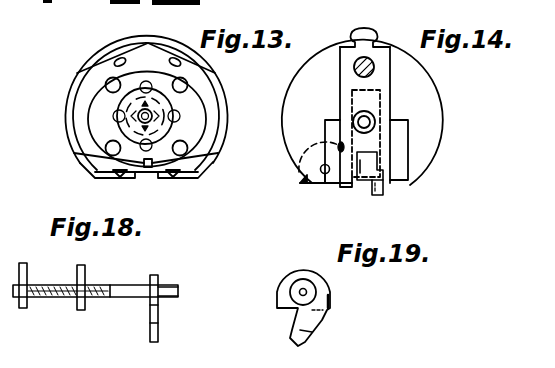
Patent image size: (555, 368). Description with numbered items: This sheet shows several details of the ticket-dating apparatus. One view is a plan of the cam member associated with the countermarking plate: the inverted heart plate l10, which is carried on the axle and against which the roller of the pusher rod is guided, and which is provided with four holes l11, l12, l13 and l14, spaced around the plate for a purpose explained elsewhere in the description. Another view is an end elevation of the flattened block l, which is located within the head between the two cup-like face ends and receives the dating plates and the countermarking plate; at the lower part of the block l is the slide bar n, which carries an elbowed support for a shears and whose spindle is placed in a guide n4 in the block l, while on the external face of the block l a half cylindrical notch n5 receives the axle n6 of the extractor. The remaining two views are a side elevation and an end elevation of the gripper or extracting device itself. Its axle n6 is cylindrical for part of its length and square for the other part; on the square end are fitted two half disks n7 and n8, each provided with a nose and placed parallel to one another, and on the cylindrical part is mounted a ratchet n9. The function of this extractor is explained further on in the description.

In FIG. 14, the flattened block l is at (377, 77).
In FIG. 13, the inverted heart plate l10 is at (197, 118).
In FIG. 13, the hole l11 is at (190, 83).
In FIG. 13, the hole l12 is at (110, 82).
In FIG. 13, the hole l13 is at (108, 149).
In FIG. 13, the hole l14 is at (177, 153).
In FIG. 14, the slide bar n is at (363, 155).
In FIG. 14, the guide n4 is at (376, 194).
In FIG. 14, the half cylindrical notch n5 is at (327, 178).
In FIG. 14, the axle n6 is at (307, 180).
In FIG. 18, the axle n6 is at (127, 290).
In FIG. 19, the axle n6 is at (310, 295).
In FIG. 18, the half disk n7 is at (23, 305).
In FIG. 18, the half disk n8 is at (82, 310).
In FIG. 19, the half disk n8 is at (300, 273).
In FIG. 18, the ratchet n9 is at (158, 315).
In FIG. 19, the ratchet n9 is at (312, 332).